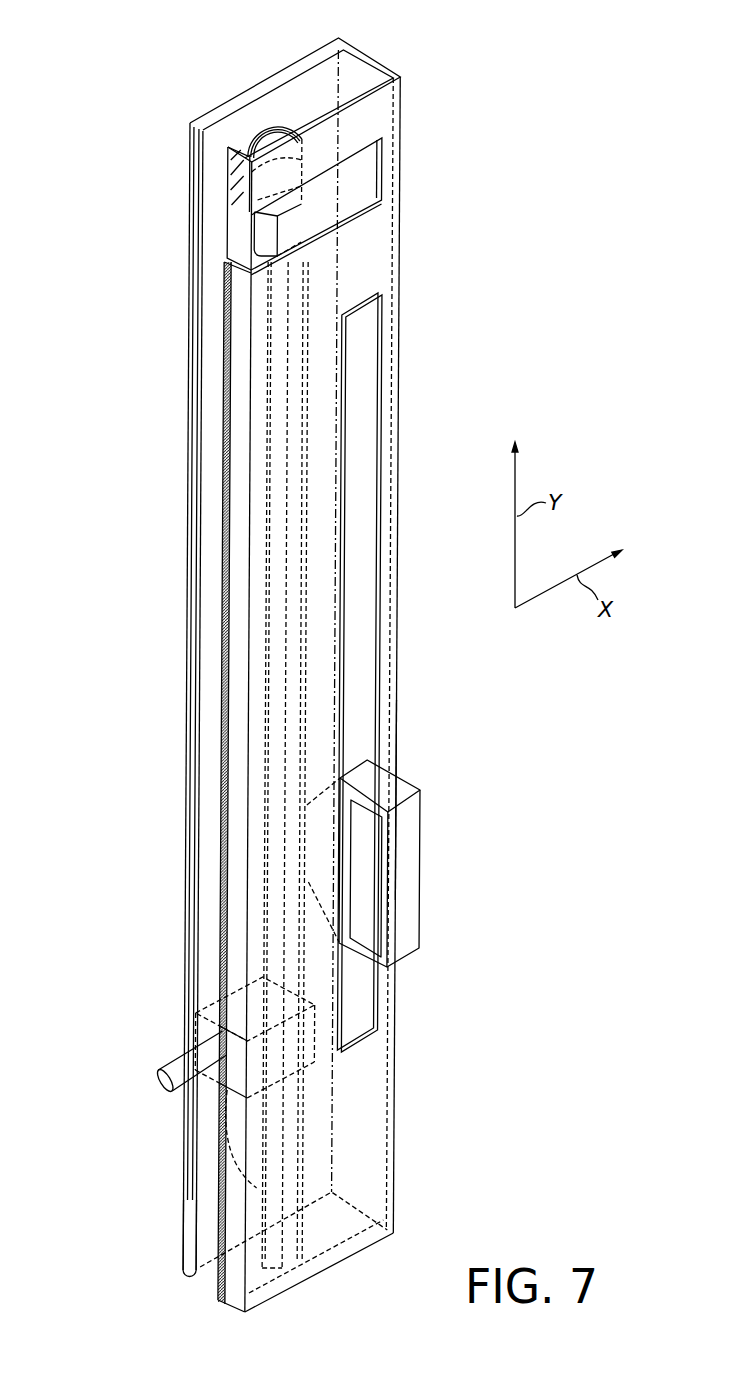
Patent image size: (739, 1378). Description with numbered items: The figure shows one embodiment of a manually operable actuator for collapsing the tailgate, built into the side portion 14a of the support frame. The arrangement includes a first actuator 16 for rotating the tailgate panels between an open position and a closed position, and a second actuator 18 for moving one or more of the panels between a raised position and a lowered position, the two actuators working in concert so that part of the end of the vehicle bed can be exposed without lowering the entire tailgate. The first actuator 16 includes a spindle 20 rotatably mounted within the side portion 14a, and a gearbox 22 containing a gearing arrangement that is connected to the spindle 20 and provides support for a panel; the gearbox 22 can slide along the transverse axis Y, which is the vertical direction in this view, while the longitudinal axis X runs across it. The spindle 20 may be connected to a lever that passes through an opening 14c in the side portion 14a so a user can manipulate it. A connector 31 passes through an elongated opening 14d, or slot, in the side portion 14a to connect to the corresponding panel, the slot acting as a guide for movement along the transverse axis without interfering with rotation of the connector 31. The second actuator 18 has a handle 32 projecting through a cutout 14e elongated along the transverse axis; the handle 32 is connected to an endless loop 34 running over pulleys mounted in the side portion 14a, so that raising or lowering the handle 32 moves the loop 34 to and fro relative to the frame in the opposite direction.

The side portion 14a is at (384, 50).
The opening 14c is at (364, 177).
The elongated opening 14d is at (203, 313).
The cutout or opening 14e is at (365, 407).
The first actuator 16 is at (128, 1114).
The second actuator 18 is at (465, 770).
The spindle 20 is at (242, 538).
The gearbox 22 is at (216, 1010).
The connector 31 is at (183, 1067).
The handle 32 is at (408, 898).
The endless loop 34 is at (224, 723).